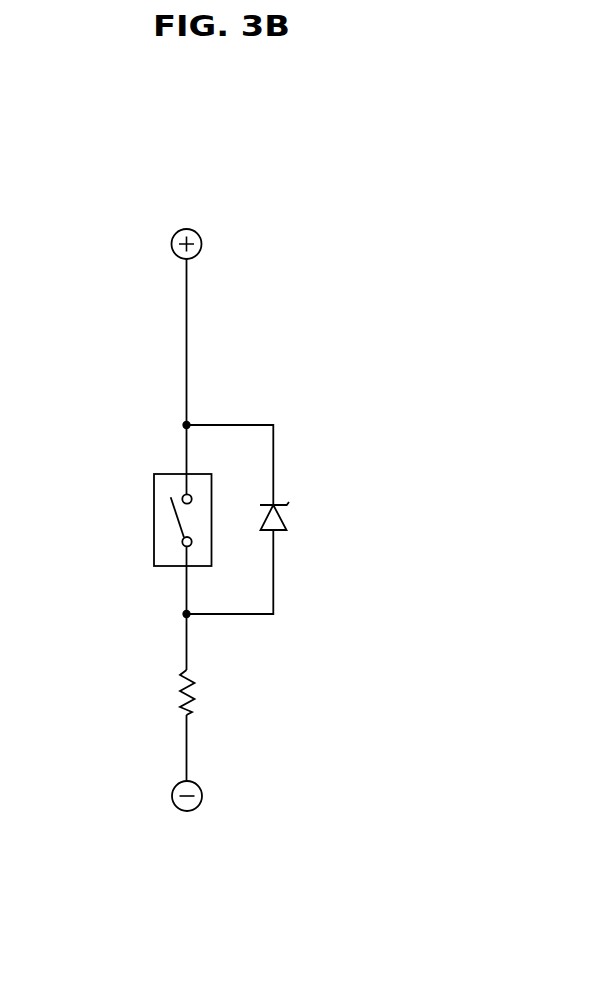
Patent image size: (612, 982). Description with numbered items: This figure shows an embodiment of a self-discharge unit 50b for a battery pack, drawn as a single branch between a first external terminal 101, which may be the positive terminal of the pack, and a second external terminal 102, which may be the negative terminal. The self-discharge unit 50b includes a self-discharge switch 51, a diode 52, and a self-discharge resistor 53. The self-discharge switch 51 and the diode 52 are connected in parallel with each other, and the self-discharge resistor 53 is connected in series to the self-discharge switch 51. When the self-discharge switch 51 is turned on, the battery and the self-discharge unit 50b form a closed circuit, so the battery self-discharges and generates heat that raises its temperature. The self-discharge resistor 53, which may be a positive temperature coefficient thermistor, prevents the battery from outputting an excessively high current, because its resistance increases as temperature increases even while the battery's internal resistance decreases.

The self-discharge unit 50b is at (328, 205).
The first external terminal 101 is at (190, 229).
The second external terminal 102 is at (190, 780).
The self-discharge switch 51 is at (154, 520).
The diode 52 is at (282, 503).
The self-discharge resistor 53 is at (193, 696).